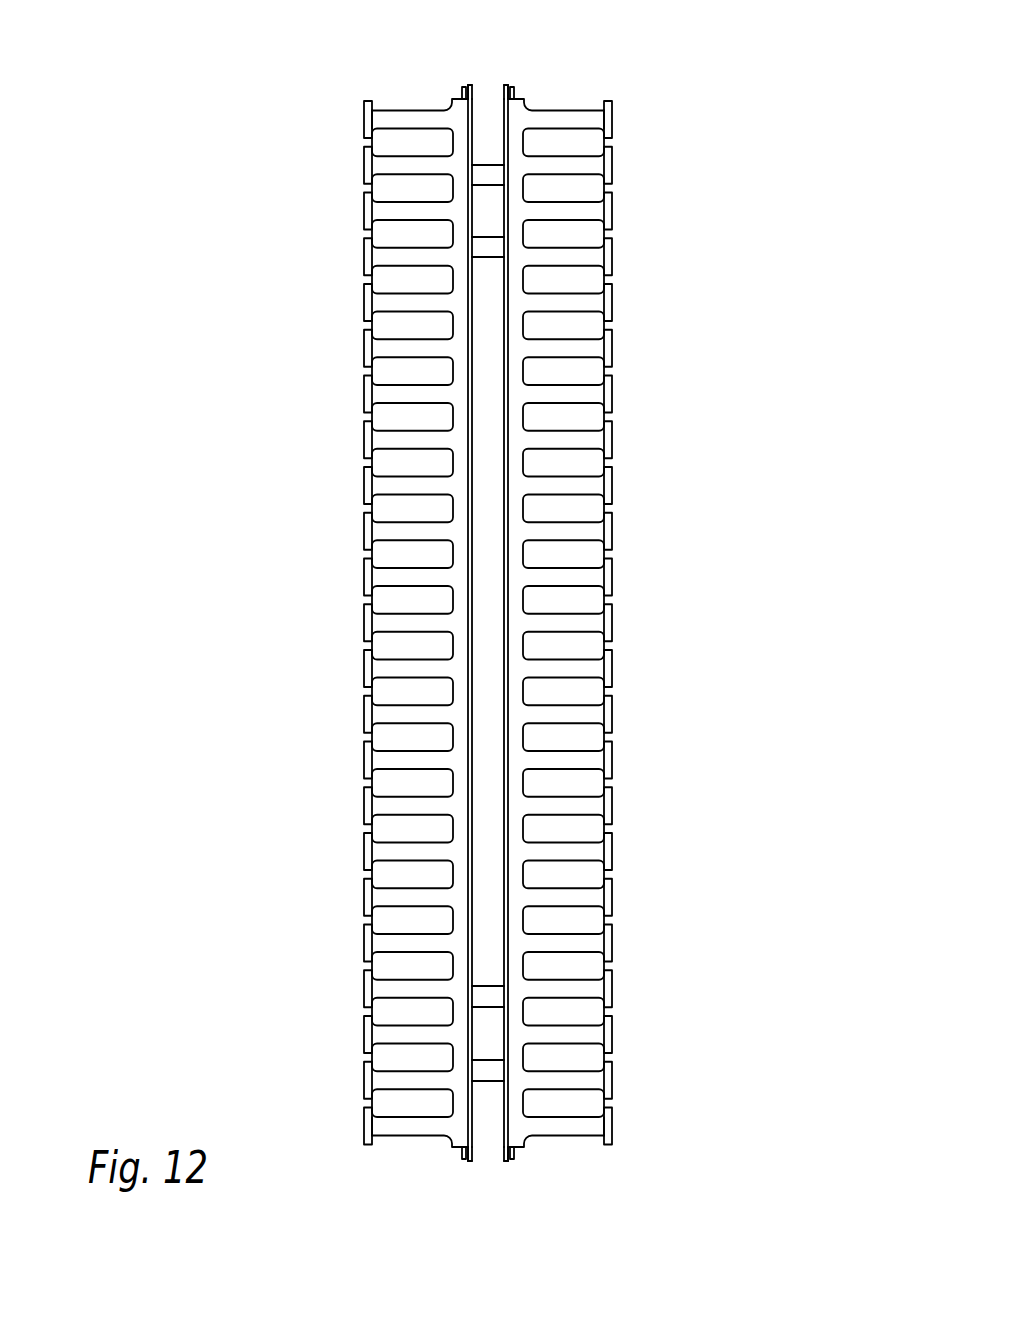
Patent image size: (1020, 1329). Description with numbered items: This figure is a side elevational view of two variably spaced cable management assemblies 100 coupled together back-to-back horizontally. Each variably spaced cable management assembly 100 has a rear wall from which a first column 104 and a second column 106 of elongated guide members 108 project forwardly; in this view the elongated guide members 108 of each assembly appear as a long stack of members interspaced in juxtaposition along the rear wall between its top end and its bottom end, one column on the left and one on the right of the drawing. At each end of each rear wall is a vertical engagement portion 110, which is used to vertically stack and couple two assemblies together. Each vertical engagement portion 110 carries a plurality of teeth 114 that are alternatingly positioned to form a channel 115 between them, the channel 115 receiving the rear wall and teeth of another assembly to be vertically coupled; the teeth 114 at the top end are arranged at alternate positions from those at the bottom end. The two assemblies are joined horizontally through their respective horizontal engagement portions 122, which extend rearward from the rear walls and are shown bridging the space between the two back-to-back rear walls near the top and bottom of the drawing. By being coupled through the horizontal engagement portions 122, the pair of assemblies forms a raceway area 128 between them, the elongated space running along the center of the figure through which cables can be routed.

The variably spaced cable management assembly 100 is at (224, 70).
The first column 104 is at (660, 140).
The second column 106 is at (317, 132).
The elongated guide members 108 is at (408, 254).
The vertical engagement portion 110 is at (426, 94).
The teeth 114 is at (463, 86).
The channel 115 is at (467, 58).
The horizontal engagement portion 122 is at (490, 185).
The raceway area 128 is at (488, 516).